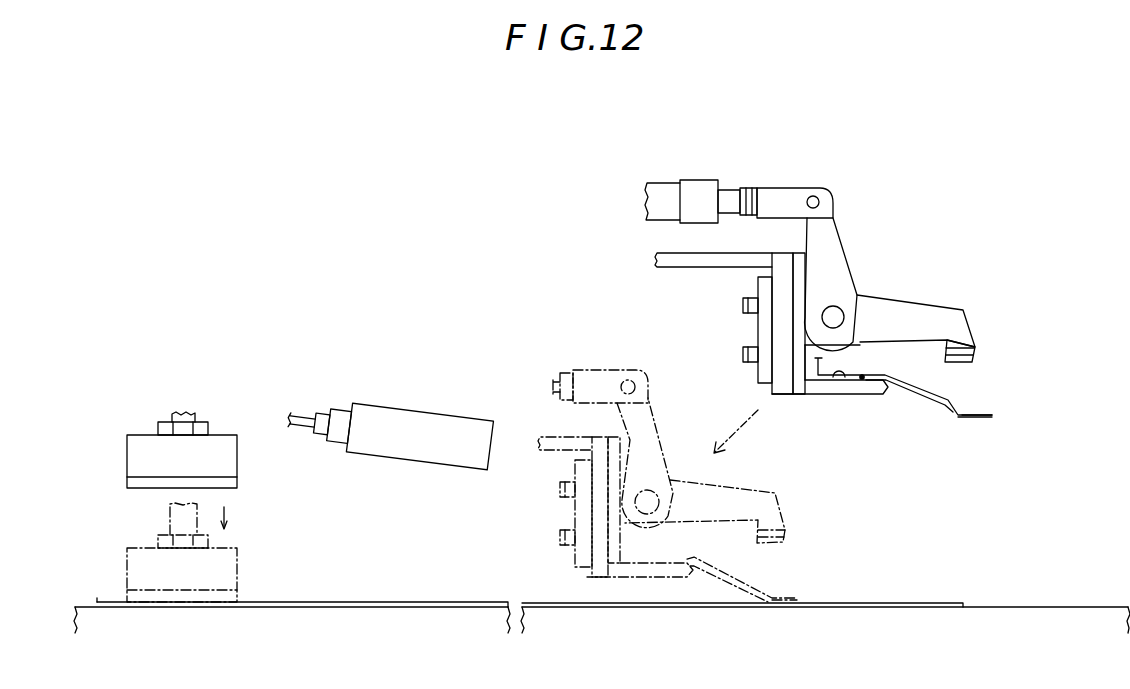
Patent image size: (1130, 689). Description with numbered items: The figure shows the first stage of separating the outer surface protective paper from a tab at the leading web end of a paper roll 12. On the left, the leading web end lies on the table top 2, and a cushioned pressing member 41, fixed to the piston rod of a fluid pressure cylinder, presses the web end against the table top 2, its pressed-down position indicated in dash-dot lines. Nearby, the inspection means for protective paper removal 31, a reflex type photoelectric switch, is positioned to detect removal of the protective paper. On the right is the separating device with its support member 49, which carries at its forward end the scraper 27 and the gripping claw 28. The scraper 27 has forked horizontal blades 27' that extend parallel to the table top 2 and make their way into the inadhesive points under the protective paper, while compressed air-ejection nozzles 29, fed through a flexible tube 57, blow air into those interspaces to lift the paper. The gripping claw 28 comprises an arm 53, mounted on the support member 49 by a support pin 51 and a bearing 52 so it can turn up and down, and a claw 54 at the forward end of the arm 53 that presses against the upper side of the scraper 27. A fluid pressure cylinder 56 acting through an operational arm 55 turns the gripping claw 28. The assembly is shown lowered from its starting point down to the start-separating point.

The base 2 is at (1108, 605).
The base plate 12 is at (483, 602).
The lead wire 27 is at (882, 508).
The lead wire end 27' is at (982, 442).
The gripping finger 28 is at (1025, 325).
The bent lead 29 is at (947, 400).
The cylinder 31 is at (407, 438).
The clamp block 41 is at (140, 463).
The support bar 49 is at (688, 262).
The pivot pin 51 is at (833, 317).
The bracket 52 is at (796, 320).
The finger arm 53 is at (962, 336).
The finger tip 54 is at (972, 360).
The lever arm 55 is at (837, 262).
The air cylinder 56 is at (667, 191).
The spring 57 is at (848, 395).